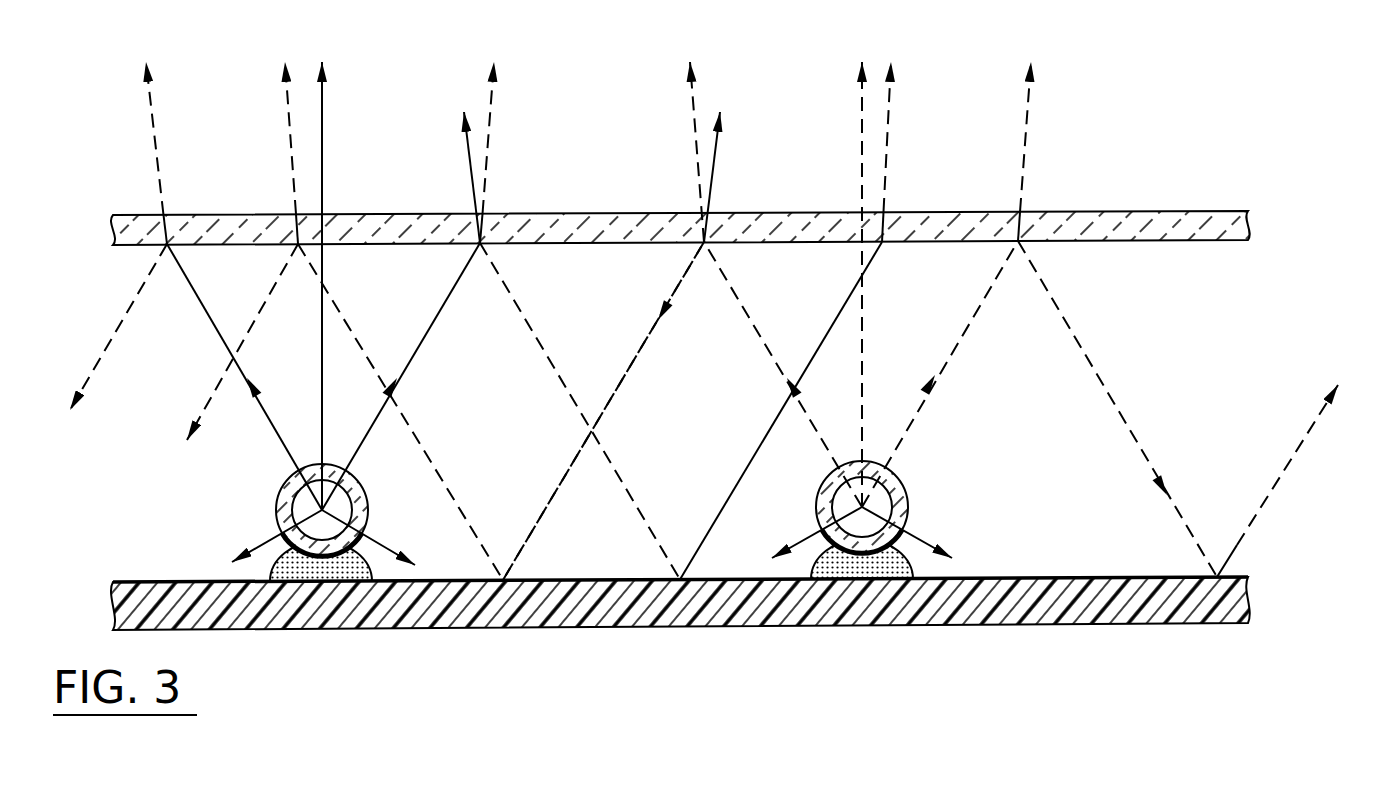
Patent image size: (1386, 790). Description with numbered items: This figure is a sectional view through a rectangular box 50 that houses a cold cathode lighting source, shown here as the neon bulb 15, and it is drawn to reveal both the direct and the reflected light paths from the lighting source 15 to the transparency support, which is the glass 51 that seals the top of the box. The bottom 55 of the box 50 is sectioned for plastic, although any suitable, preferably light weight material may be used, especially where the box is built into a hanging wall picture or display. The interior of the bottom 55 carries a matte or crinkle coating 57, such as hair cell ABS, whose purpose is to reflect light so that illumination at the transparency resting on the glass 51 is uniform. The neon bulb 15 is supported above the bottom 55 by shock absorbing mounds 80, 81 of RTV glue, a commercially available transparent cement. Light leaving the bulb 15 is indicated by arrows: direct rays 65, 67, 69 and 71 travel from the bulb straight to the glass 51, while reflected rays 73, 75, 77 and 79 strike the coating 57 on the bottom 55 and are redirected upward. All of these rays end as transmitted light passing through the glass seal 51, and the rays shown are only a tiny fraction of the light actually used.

The lighting source 15 is at (358, 483).
The box 50 is at (1050, 503).
The glass 51 is at (1062, 211).
The bottom 55 is at (918, 626).
The matte coating 57 is at (570, 580).
The direct light ray 65 is at (183, 277).
The direct light ray 67 is at (320, 377).
The direct light ray 69 is at (417, 352).
The direct light ray 71 is at (738, 295).
The reflected light ray 73 is at (109, 346).
The reflected light ray 75 is at (203, 412).
The reflected light ray 77 is at (625, 380).
The reflected light ray 79 is at (1063, 317).
The RTV glue mound 80 is at (337, 562).
The RTV glue mound 81 is at (900, 567).